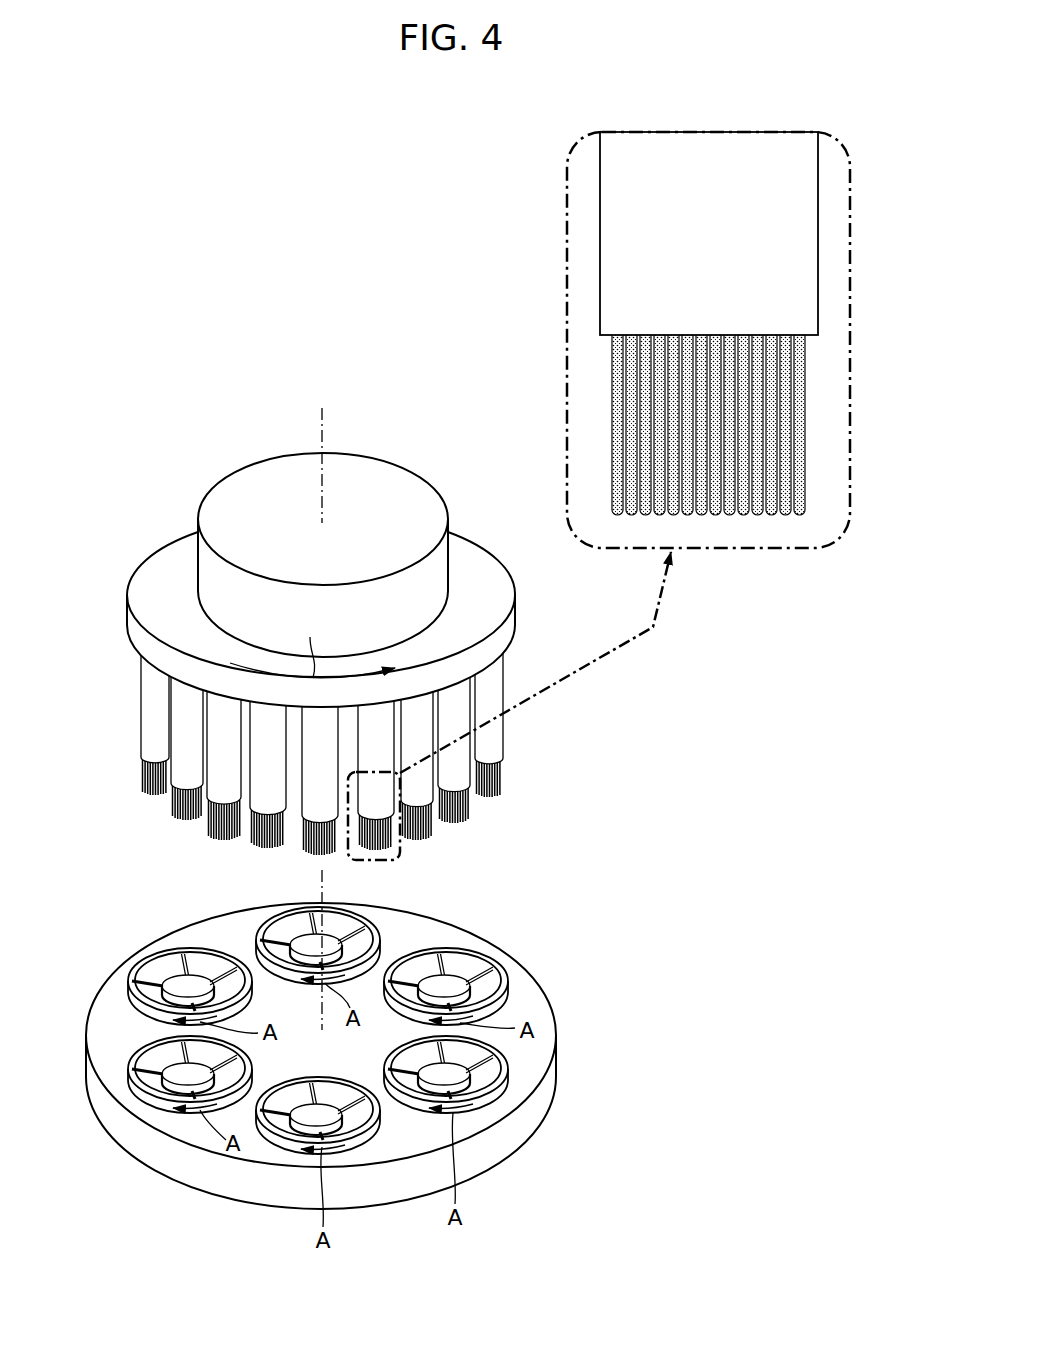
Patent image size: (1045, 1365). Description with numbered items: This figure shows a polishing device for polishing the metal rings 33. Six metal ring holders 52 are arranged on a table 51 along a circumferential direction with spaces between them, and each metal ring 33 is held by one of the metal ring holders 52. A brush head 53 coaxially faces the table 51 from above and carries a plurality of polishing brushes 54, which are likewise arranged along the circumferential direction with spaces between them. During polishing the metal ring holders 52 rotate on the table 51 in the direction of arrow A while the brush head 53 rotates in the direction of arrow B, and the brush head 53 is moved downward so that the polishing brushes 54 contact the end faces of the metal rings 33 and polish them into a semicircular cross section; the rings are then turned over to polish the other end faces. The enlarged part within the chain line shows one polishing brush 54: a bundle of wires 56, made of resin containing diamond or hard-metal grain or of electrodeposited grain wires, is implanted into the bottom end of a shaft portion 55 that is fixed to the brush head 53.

The metal ring 33 is at (190, 948).
The table 51 is at (527, 997).
The metal ring holder 52 is at (160, 967).
The brush head 53 is at (237, 484).
The polishing brush 54 is at (212, 841).
The shaft portion 55 is at (726, 147).
The wires 56 is at (782, 515).